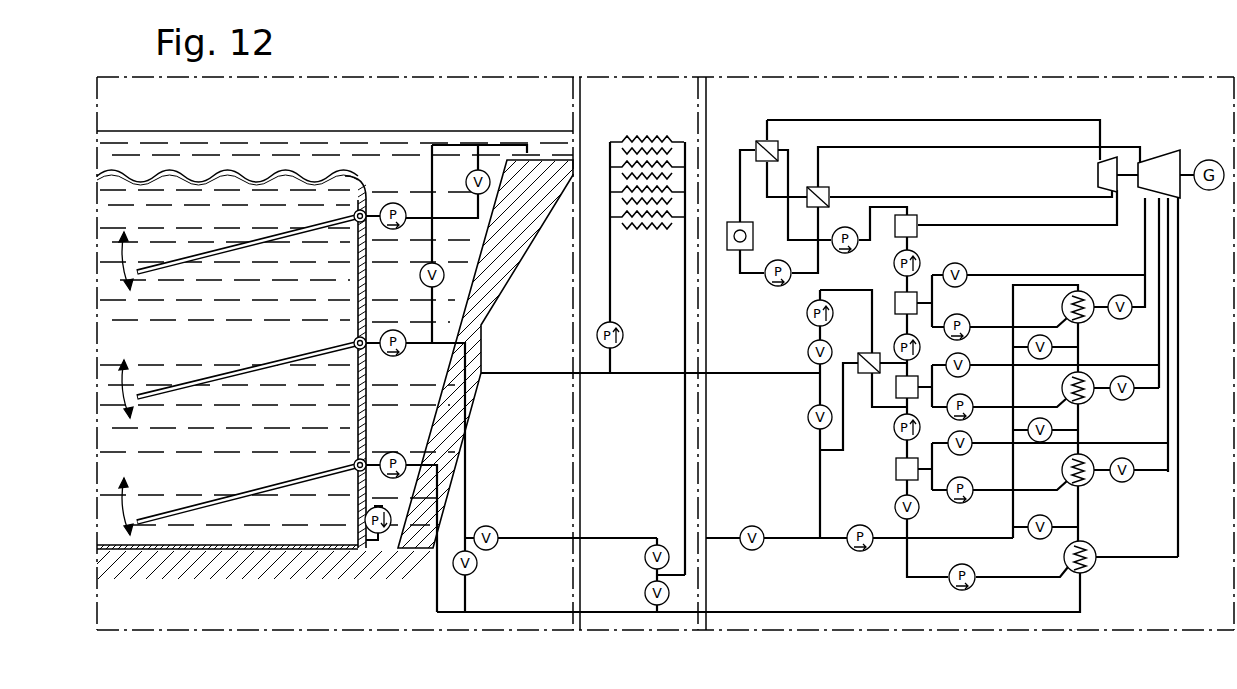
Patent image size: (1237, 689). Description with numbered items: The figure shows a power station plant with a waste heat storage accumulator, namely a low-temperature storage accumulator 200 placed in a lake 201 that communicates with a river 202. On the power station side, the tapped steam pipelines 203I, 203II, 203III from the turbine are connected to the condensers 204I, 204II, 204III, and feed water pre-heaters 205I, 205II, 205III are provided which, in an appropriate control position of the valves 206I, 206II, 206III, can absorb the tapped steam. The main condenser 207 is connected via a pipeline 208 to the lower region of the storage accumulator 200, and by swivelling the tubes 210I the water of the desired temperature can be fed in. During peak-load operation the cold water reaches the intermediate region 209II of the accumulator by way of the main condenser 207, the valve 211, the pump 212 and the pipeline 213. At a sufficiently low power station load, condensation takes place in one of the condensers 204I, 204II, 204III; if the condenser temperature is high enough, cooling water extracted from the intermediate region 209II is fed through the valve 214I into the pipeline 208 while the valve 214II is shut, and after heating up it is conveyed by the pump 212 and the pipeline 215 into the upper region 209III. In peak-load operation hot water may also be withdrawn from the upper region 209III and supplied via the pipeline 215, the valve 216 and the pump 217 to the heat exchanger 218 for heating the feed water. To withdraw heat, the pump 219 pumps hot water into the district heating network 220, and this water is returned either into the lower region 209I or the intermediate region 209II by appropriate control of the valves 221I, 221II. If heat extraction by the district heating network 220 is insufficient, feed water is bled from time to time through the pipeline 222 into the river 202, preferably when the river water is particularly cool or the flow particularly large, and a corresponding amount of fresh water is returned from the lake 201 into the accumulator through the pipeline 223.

The low-temperature storage accumulator 200 is at (366, 198).
The lake 201 is at (196, 128).
The river 202 is at (538, 152).
The tapped steam pipeline 203I is at (1180, 410).
The tapped steam pipeline 203II is at (1162, 340).
The tapped steam pipeline 203III is at (1145, 252).
The condenser 204I is at (1088, 485).
The condenser 204II is at (1088, 402).
The condenser 204III is at (1088, 321).
The feed water pre-heater 205I is at (895, 473).
The feed water pre-heater 205II is at (894, 398).
The feed water pre-heater 205III is at (894, 300).
The valve 206I is at (973, 452).
The valve 206II is at (972, 374).
The valve 206III is at (960, 262).
The main condenser 207 is at (1096, 560).
The pipeline 208 is at (1083, 598).
The lower region 209I is at (277, 493).
The intermediate region 209II is at (277, 364).
The upper region 209III is at (290, 240).
The swivelling tube 210I is at (298, 480).
The valve 211 is at (1040, 540).
The pump 212 is at (853, 550).
The pipeline 213 is at (778, 546).
The valve 214I is at (478, 565).
The valve 214II is at (492, 526).
The pipeline 215 is at (725, 377).
The valve 216 is at (807, 352).
The pump 217 is at (806, 314).
The heat exchanger 218 is at (856, 368).
The pump 219 is at (620, 340).
The district heating network 220 is at (628, 245).
The valve 221I is at (645, 556).
The valve 221II is at (645, 594).
The pipeline 222 is at (478, 145).
The pipeline 223 is at (366, 540).